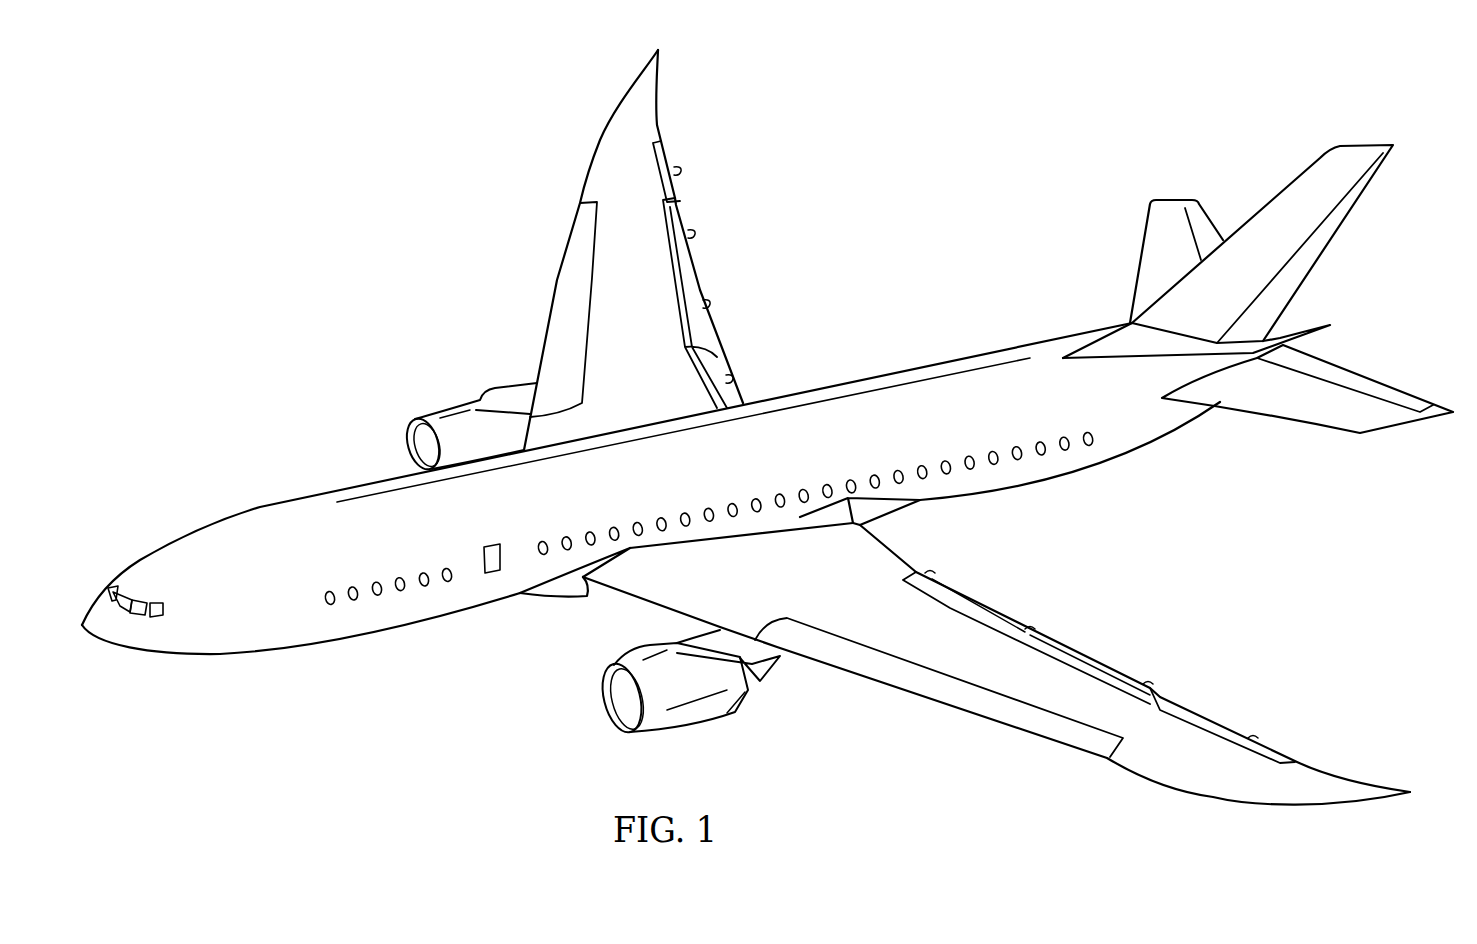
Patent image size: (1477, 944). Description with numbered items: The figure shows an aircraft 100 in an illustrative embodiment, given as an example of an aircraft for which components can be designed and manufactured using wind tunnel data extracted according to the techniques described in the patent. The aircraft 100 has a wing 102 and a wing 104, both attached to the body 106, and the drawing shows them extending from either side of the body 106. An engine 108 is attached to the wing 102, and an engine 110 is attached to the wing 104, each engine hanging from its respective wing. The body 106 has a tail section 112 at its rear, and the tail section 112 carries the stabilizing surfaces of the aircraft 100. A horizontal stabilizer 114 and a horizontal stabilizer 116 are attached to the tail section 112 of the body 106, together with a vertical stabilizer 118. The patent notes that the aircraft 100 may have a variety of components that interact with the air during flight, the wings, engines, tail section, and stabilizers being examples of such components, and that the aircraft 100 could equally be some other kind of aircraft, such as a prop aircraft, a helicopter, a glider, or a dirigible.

The aircraft 100 is at (357, 202).
The wing 102 is at (656, 87).
The wing 104 is at (1253, 805).
The body 106 is at (263, 507).
The engine 108 is at (450, 400).
The engine 110 is at (693, 727).
The tail section 112 is at (1209, 462).
The horizontal stabilizer 114 is at (1138, 262).
The horizontal stabilizer 116 is at (1310, 423).
The vertical stabilizer 118 is at (1340, 232).